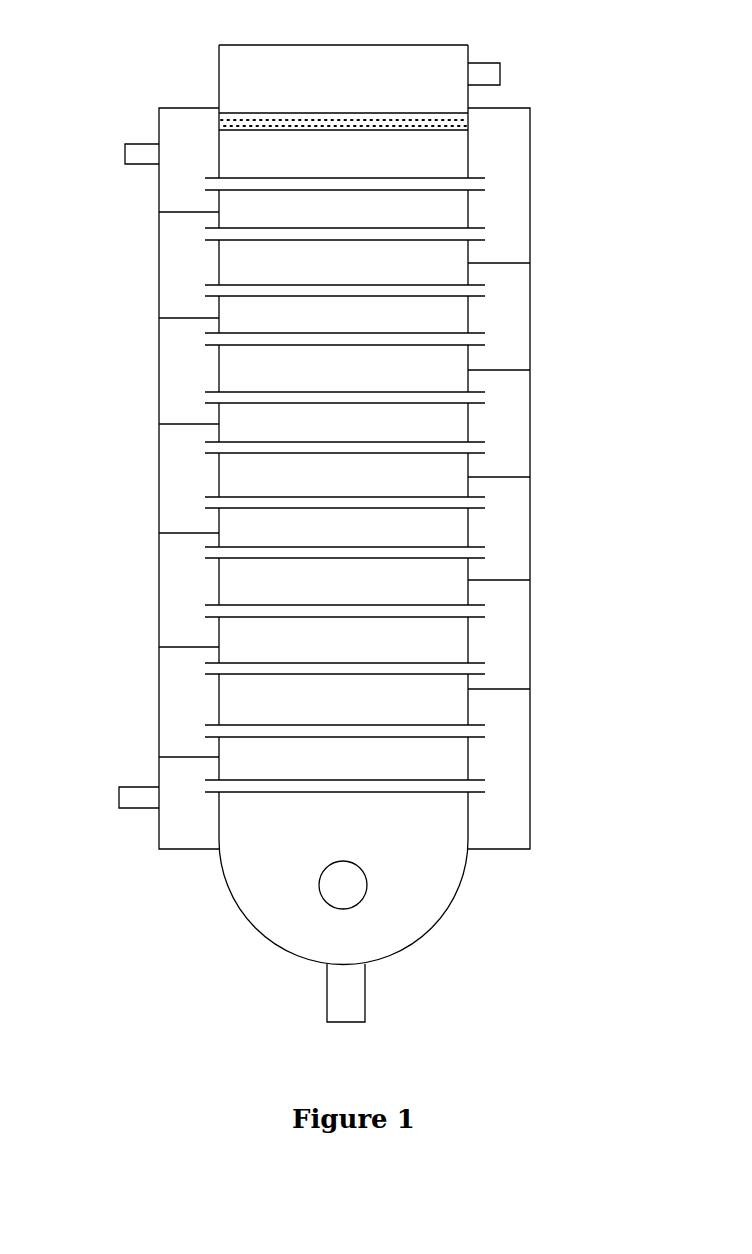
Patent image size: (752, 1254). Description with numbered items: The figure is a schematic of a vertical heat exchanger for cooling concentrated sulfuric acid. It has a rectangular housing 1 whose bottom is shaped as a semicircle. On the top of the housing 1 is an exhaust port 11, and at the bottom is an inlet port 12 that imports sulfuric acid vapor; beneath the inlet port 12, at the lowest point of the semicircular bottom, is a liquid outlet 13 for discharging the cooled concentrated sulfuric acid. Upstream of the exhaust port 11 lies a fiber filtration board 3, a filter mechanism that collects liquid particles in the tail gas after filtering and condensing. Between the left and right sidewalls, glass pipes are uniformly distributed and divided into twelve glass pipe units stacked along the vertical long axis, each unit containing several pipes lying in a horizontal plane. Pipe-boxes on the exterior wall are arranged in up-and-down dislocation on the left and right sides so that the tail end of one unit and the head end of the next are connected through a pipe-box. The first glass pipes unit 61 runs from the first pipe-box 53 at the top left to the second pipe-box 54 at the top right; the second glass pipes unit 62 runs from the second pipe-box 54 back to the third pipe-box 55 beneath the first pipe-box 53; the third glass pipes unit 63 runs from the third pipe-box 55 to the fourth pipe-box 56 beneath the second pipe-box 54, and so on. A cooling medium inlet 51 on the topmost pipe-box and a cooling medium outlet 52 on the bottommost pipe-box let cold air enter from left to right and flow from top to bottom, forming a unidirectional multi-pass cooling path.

The housing 1 is at (220, 62).
The fiber filtration board 3 is at (388, 122).
The exhaust port 11 is at (500, 80).
The inlet port 12 is at (330, 880).
The liquid outlet 13 is at (362, 1013).
The cooling medium inlet 51 is at (135, 155).
The cooling medium outlet 52 is at (135, 786).
The first pipe-box 53 is at (167, 181).
The second pipe-box 54 is at (512, 168).
The third pipe-box 55 is at (187, 287).
The fourth pipe-box 56 is at (505, 315).
The first glass pipes unit 61 is at (375, 188).
The second glass pipes unit 62 is at (420, 236).
The third glass pipes unit 63 is at (360, 292).